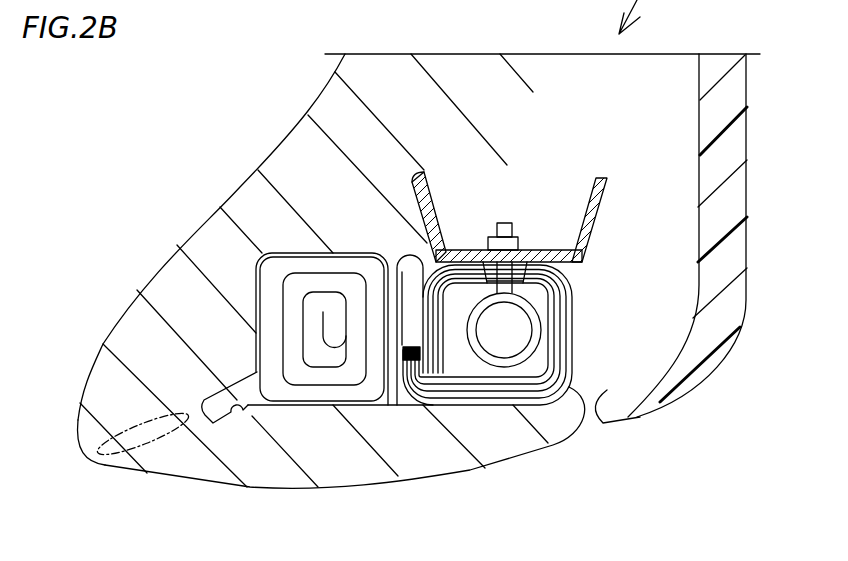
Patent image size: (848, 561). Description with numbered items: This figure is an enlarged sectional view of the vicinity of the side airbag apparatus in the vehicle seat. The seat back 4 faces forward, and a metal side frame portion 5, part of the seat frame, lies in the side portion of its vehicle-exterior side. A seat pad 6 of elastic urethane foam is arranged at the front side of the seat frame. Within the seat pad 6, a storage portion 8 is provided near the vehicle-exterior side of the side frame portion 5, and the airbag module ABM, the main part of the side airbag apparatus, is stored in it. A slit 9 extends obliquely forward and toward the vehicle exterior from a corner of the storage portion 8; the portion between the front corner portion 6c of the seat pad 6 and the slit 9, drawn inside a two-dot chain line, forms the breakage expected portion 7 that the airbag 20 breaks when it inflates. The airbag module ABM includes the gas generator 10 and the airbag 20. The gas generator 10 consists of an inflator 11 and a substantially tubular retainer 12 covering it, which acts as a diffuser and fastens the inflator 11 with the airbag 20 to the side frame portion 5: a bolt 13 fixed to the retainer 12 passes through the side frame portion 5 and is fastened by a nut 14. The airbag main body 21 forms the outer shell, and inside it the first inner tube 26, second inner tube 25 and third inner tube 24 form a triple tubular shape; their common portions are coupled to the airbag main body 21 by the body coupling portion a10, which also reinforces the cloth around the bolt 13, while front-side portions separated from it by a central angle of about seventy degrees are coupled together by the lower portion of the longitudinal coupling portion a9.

The seat back 4 is at (283, 490).
The side frame portion 5 is at (597, 206).
The seat pad 6 is at (151, 279).
The corner portion 6c is at (83, 455).
The breakage expected portion 7 is at (162, 440).
The storage portion 8 is at (392, 408).
The slit 9 is at (237, 416).
The gas generator 10 is at (564, 330).
The inflator 11 is at (520, 325).
The retainer 12 is at (533, 346).
The bolt 13 is at (504, 222).
The nut 14 is at (518, 243).
The airbag 20 is at (326, 393).
The airbag main body 21 is at (515, 393).
The third inner tube 24 is at (494, 395).
The second inner tube 25 is at (476, 398).
The first inner tube 26 is at (453, 402).
The longitudinal coupling portion a9 is at (411, 349).
The body coupling portion a10 is at (535, 283).
The airbag module ABM is at (602, 381).